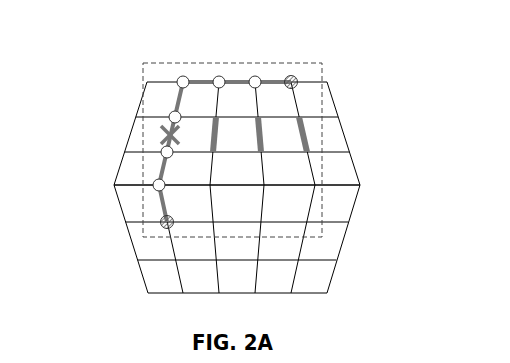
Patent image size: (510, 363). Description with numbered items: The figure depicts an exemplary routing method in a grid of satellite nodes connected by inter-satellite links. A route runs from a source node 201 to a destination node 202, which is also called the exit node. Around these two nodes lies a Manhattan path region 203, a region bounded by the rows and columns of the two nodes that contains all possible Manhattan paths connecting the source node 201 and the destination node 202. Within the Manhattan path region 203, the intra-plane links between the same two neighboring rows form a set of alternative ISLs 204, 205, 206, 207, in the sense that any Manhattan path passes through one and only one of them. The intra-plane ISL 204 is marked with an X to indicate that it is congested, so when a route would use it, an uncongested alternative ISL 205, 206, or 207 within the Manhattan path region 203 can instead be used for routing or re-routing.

The source node 201 is at (161, 222).
The destination node 202 is at (288, 74).
The Manhattan path region 203 is at (143, 68).
The intra-plane ISL 204 is at (160, 135).
The alternative ISL 205 is at (212, 126).
The alternative ISL 206 is at (262, 128).
The alternative ISL 207 is at (306, 140).